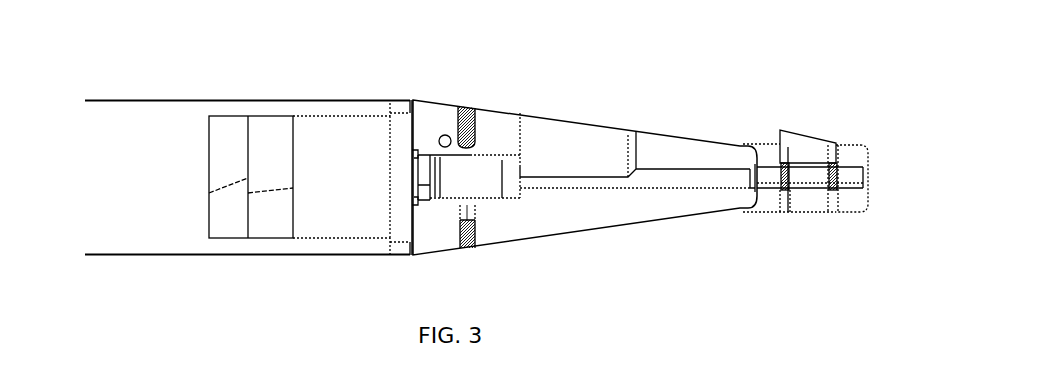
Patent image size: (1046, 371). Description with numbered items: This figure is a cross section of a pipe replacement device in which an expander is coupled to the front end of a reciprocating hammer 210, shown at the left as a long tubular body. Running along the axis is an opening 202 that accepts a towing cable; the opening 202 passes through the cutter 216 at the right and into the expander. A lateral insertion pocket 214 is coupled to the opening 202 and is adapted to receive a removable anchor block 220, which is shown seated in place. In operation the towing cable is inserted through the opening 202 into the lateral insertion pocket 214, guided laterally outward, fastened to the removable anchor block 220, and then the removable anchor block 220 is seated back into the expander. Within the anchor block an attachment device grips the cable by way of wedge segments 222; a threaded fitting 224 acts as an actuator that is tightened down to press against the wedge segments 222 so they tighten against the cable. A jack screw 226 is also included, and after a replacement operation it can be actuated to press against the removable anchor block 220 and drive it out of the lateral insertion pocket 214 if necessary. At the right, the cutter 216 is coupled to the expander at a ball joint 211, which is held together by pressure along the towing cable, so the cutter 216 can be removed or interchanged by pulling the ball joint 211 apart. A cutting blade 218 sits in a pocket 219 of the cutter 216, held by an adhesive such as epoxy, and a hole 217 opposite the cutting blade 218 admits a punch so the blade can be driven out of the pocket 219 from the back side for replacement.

The opening 202 is at (867, 302).
The reciprocating hammer 210 is at (150, 115).
The ball joint 211 is at (745, 143).
The lateral insertion pocket 214 is at (580, 140).
The cutter 216 is at (805, 192).
The hole 217 is at (828, 193).
The cutting blade 218 is at (800, 145).
The pocket 219 is at (833, 152).
The removable anchor block 220 is at (493, 128).
The wedge segments 222 is at (475, 172).
The threaded fitting 224 is at (417, 205).
The jack screw 226 is at (477, 245).